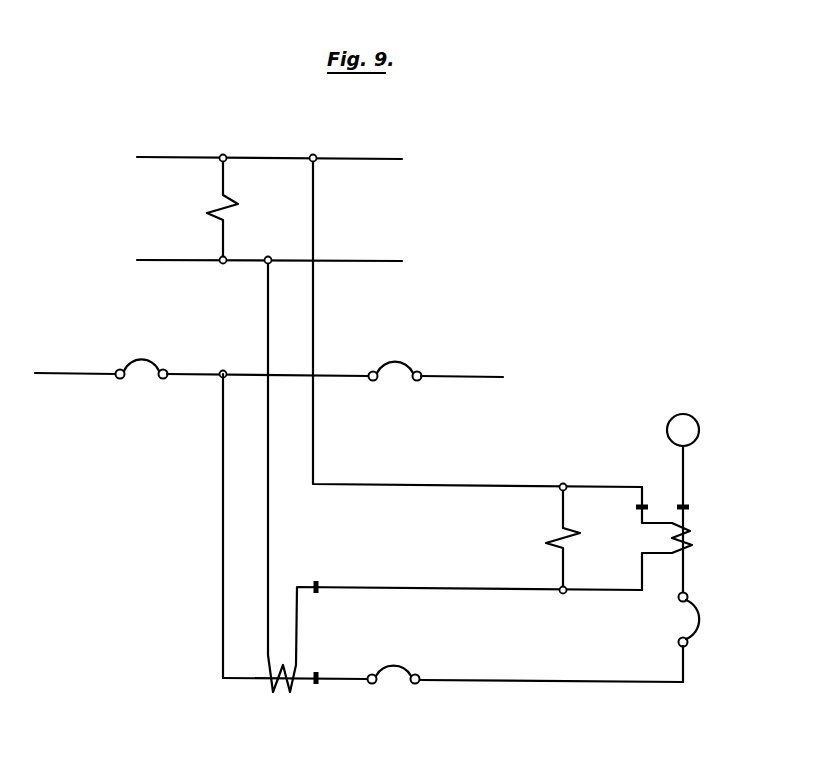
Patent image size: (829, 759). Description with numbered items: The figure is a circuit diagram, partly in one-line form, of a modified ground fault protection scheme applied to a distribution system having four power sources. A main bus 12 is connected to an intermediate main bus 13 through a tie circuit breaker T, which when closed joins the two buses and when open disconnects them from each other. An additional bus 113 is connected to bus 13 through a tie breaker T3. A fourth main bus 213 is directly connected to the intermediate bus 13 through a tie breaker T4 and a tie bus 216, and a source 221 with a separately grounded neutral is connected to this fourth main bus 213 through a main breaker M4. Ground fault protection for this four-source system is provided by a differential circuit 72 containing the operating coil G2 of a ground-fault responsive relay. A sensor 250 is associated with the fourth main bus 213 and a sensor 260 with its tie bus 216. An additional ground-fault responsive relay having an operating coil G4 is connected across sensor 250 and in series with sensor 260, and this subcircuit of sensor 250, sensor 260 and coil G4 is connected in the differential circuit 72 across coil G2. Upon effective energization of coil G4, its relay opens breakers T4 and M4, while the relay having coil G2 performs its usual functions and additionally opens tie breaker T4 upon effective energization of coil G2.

The differential circuit 72 is at (170, 157).
The operating coil G2 is at (212, 208).
The main bus 12 is at (67, 373).
The tie circuit breaker T is at (142, 358).
The main bus 13 is at (203, 373).
The tie breaker T3 is at (386, 364).
The additional bus 113 is at (460, 376).
The tie bus 216 is at (222, 561).
The fourth main bus 213 is at (544, 683).
The current sensor 260 is at (284, 690).
The tie breaker T4 is at (397, 664).
The operating coil G4 is at (553, 540).
The current sensor 250 is at (756, 560).
The source 221 is at (699, 430).
The main breaker M4 is at (699, 620).